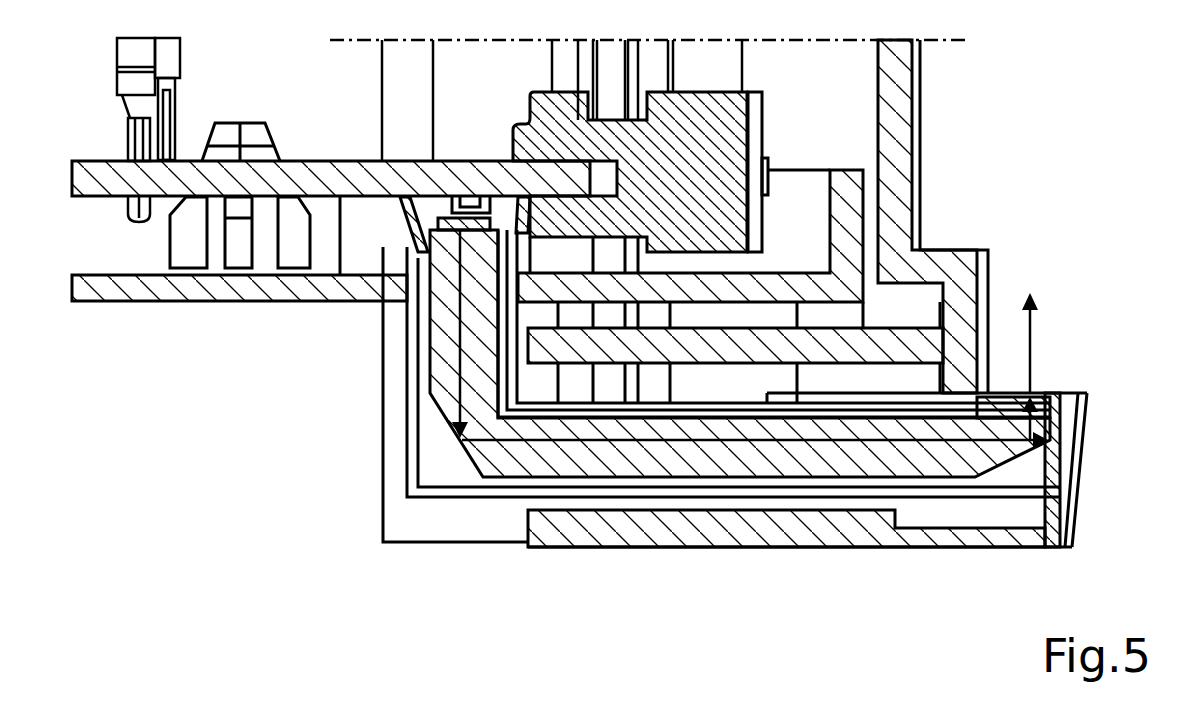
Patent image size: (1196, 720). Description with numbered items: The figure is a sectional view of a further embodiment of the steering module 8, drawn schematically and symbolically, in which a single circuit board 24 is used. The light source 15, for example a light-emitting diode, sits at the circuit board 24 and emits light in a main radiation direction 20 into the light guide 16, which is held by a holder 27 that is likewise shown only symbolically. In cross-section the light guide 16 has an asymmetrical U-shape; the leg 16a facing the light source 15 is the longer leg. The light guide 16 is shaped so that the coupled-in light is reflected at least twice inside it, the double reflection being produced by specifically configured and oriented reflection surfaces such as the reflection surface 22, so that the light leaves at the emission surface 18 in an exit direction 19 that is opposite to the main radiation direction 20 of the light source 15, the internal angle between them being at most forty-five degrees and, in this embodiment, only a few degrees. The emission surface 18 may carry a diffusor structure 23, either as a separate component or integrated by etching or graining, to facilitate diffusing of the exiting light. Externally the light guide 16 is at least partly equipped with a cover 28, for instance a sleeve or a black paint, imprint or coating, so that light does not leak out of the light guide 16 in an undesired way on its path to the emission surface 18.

The steering module 8 is at (350, 142).
The circuit board 24 is at (318, 180).
The light source 15 is at (470, 205).
The holder 27 is at (400, 226).
The cover 28 is at (743, 412).
The diffusor structure 23 is at (990, 393).
The exit direction 19 is at (1035, 330).
The emission surface 18 is at (1047, 393).
The light guide 16 is at (1070, 420).
The main radiation direction 20 is at (458, 332).
The leg of the light guide 16a is at (427, 392).
The reflection surface 22 is at (1010, 460).